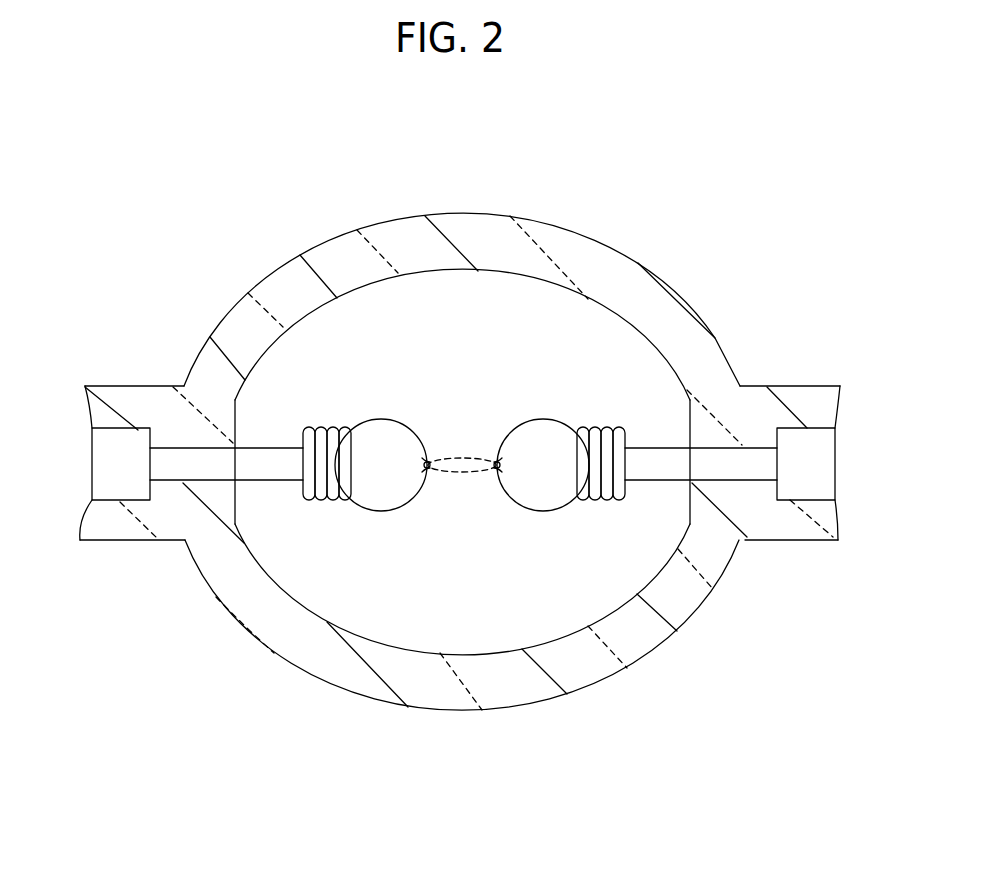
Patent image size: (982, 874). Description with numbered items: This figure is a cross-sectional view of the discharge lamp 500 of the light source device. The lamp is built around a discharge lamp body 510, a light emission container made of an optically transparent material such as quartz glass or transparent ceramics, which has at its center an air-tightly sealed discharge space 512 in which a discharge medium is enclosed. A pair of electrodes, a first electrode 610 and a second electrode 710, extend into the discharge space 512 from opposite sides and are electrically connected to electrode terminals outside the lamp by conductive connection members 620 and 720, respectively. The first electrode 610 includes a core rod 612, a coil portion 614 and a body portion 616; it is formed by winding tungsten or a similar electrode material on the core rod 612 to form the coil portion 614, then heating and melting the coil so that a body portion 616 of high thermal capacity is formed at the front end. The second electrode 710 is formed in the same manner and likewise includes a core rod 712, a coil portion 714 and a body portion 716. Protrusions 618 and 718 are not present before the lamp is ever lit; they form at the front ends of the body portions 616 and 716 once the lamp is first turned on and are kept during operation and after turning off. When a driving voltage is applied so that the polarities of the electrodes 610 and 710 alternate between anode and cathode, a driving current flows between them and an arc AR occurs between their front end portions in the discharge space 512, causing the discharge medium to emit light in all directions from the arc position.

The discharge lamp 500 is at (606, 160).
The discharge lamp body 510 is at (310, 253).
The discharge space 512 is at (455, 295).
The first electrode 610 is at (296, 498).
The core rod 612 is at (167, 480).
The coil portion 614 is at (351, 506).
The body portion 616 is at (410, 487).
The protrusion 618 is at (428, 458).
The connection member 620 is at (133, 437).
The second electrode 710 is at (631, 496).
The core rod 712 is at (760, 480).
The coil portion 714 is at (577, 506).
The body portion 716 is at (514, 487).
The protrusion 718 is at (496, 458).
The connection member 720 is at (790, 437).
The arc AR is at (472, 452).